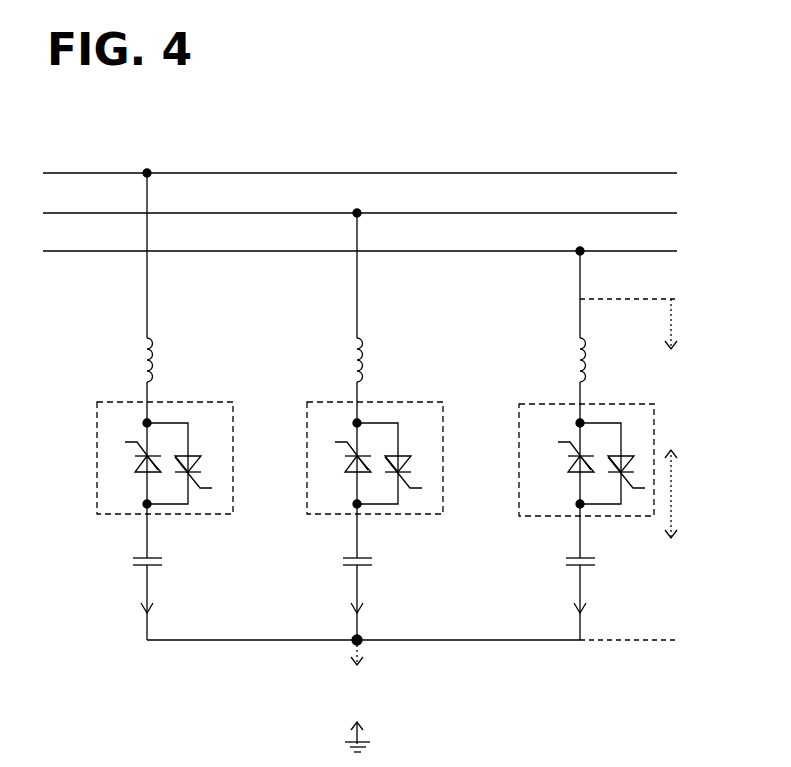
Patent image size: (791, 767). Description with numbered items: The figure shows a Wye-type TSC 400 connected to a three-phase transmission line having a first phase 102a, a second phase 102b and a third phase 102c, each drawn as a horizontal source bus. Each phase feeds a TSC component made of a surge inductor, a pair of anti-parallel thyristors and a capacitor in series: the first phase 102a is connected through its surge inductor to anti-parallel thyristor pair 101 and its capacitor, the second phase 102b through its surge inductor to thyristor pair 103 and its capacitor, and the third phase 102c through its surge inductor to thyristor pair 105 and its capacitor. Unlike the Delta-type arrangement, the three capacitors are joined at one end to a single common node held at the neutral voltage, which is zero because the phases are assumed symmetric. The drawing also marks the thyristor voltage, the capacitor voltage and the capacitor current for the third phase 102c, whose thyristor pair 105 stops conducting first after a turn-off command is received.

The Wye-type TSC 400 is at (98, 104).
The first phase 102a is at (390, 173).
The second phase 102b is at (391, 213).
The third phase 102c is at (390, 251).
The anti-parallel thyristor pair 101 is at (217, 400).
The thyristor pair 103 is at (427, 400).
The thyristor pair 105 is at (637, 402).